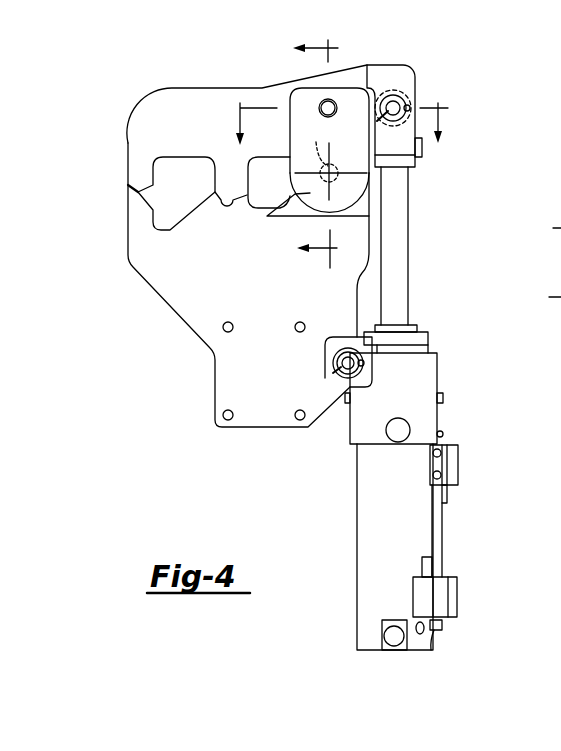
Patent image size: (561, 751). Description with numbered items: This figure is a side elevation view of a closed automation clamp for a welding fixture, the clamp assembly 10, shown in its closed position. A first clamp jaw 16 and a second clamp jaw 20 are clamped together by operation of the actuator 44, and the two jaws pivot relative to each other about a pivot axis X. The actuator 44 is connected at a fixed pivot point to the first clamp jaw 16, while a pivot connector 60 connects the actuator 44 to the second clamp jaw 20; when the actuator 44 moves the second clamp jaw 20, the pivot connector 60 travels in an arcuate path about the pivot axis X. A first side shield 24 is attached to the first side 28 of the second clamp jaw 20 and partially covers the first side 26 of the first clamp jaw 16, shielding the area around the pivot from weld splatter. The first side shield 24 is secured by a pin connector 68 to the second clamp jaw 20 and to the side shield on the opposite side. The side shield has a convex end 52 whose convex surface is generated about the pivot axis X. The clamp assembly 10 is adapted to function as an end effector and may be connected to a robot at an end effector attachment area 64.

The clamp assembly 10 is at (116, 96).
The first clamp jaw 16 is at (172, 295).
The second clamp jaw 20 is at (160, 98).
The first side shield 24 is at (267, 216).
The first side 26 is at (263, 297).
The first side 28 is at (188, 124).
The actuator 44 is at (408, 520).
The convex ends 52 is at (355, 203).
The pivot connector 60 is at (405, 101).
The end effector attachment area 64 is at (233, 385).
The pin connector 68 is at (336, 102).